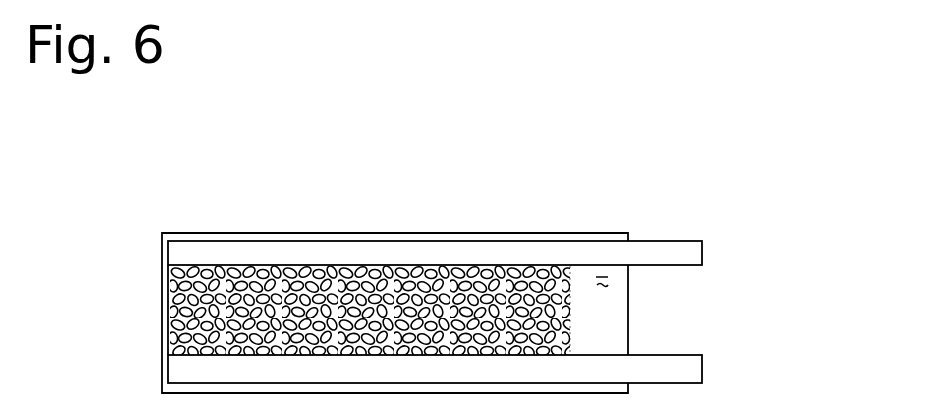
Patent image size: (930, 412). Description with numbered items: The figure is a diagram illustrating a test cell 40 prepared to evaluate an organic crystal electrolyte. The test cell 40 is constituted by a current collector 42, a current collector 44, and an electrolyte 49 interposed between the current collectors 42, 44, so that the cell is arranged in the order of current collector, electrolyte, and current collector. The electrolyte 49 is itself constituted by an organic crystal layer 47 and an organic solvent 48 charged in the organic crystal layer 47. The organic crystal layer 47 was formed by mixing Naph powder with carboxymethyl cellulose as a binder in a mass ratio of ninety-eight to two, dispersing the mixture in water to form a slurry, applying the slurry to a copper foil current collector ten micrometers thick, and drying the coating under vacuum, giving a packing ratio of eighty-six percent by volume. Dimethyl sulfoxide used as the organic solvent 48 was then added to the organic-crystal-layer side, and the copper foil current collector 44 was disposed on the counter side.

The test cell 40 is at (506, 269).
The current collector 42 is at (702, 248).
The current collector 44 is at (702, 376).
The organic crystal layer 47 is at (562, 300).
The organic solvent 48 is at (566, 332).
The electrolyte 49 is at (510, 310).